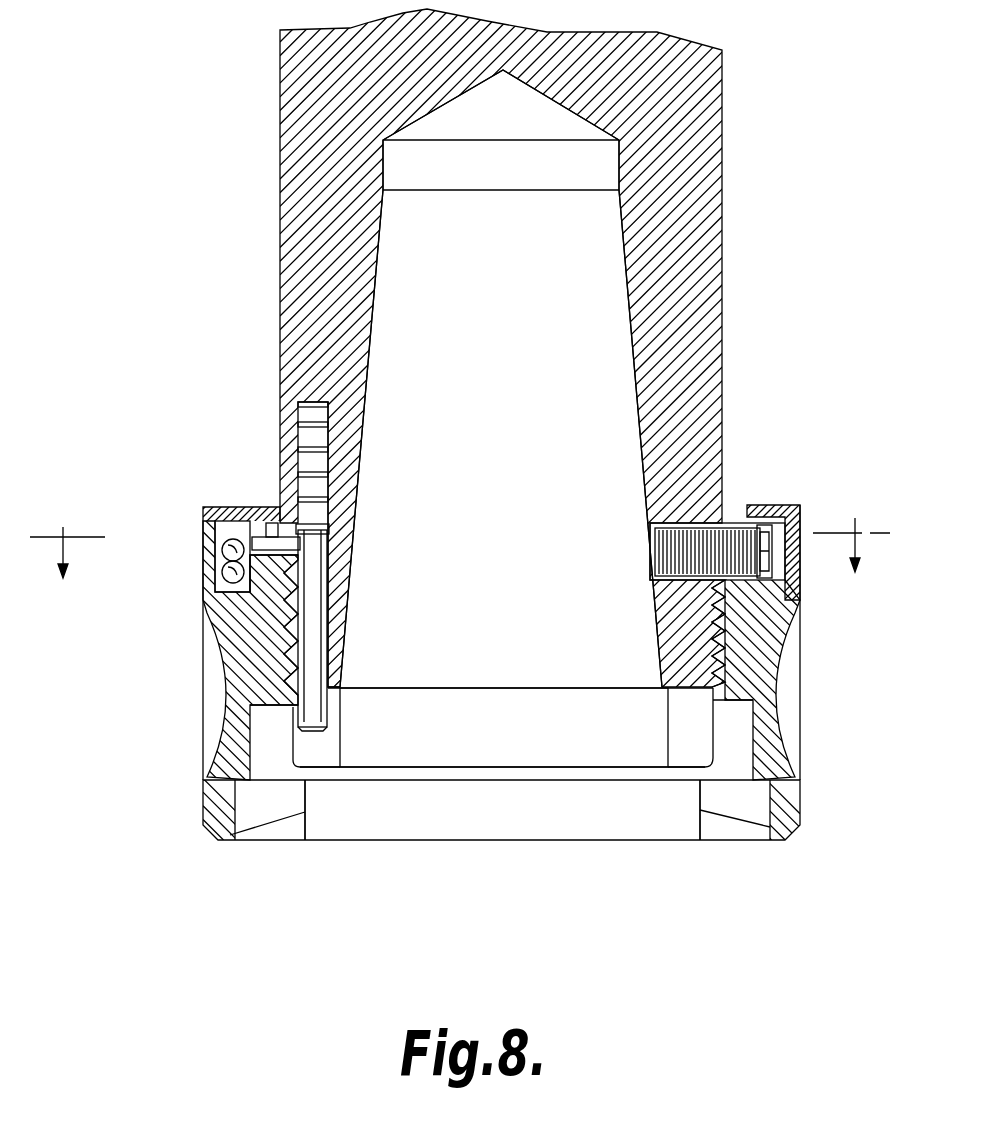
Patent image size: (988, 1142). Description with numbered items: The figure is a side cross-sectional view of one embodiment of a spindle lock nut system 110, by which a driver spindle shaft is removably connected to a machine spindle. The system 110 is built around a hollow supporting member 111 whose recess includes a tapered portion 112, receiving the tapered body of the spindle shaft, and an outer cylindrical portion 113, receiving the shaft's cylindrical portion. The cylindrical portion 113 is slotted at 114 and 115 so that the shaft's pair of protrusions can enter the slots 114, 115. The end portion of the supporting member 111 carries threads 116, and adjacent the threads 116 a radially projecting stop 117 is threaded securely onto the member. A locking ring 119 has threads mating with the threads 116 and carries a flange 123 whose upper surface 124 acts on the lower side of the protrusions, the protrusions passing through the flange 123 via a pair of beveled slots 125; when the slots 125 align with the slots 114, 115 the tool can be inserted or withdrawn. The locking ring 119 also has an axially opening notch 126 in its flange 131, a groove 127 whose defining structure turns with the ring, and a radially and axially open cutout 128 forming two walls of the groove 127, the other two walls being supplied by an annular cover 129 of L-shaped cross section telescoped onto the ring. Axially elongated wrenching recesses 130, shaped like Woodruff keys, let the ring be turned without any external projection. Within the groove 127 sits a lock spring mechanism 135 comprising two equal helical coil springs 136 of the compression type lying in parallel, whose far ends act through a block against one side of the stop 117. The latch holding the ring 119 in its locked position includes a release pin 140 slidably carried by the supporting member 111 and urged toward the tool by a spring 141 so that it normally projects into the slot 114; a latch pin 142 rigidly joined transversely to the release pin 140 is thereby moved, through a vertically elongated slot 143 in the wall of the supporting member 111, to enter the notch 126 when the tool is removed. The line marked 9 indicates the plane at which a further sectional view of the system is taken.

The section line 9- 9 is at (462, 536).
The lock nut system 110 is at (745, 459).
The hollow supporting member 111 is at (724, 258).
The tapered portion 112 is at (640, 436).
The outer cylindrical portion 113 is at (625, 750).
The slot 114 is at (330, 753).
The slot 115 is at (690, 750).
The threads 116 is at (713, 625).
The radially projecting stop 117 is at (757, 525).
The locking ring 119 is at (800, 787).
The flange 123 is at (446, 815).
The upper surface 124 is at (526, 768).
The beveled slots 125 is at (266, 812).
The axially opening notch 126 is at (252, 515).
The groove 127 is at (215, 557).
The cutout 128 is at (210, 625).
The annular cover 129 is at (222, 590).
The wrenching recesses 130 is at (210, 735).
The flange 131 is at (338, 567).
The lock spring mechanism 135 is at (203, 517).
The helical coil springs 136 is at (224, 536).
The release pin 140 is at (298, 670).
The spring 141 is at (292, 400).
The latch pin 142 is at (278, 525).
The slot 143 is at (282, 460).